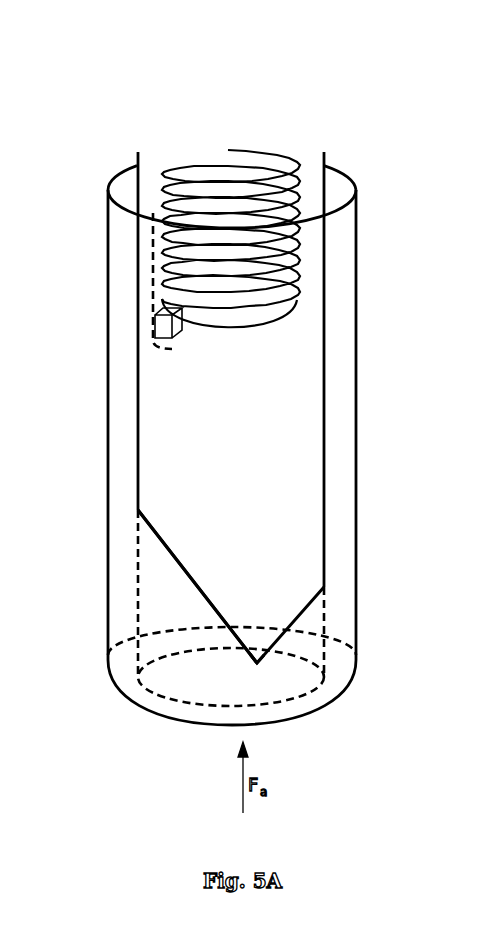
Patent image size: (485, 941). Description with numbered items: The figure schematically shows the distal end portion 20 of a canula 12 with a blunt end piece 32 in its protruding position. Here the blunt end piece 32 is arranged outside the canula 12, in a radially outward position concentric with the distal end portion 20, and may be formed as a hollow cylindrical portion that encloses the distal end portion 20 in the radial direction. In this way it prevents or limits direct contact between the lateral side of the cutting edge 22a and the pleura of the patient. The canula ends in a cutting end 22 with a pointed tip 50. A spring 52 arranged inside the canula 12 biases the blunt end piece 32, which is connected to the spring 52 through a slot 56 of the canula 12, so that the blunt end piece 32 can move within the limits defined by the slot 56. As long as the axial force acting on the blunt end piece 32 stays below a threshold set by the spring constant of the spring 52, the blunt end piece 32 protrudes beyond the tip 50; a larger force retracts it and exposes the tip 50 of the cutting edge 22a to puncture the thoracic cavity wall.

The canula 12 is at (135, 155).
The distal end portion 20 is at (362, 425).
The cutting end 22 is at (168, 578).
The cutting edge 22a is at (197, 585).
The blunt end piece 32 is at (108, 657).
The pointed tip 50 is at (257, 663).
The spring 52 is at (278, 152).
The slot 56 is at (152, 282).